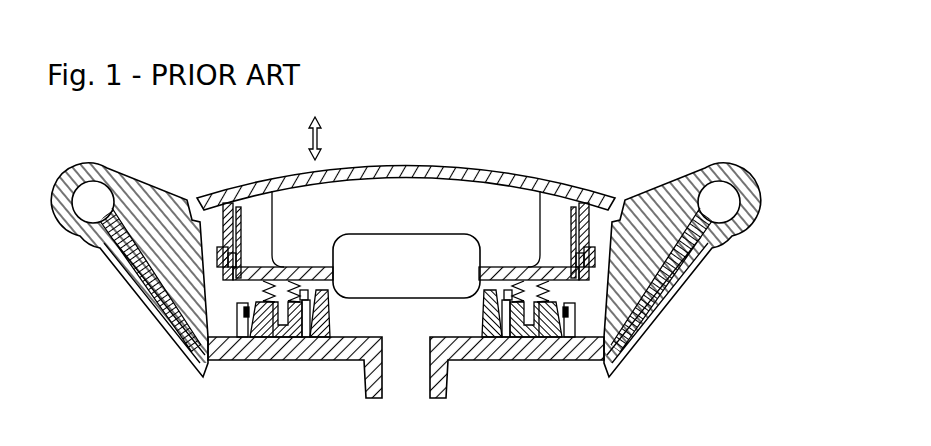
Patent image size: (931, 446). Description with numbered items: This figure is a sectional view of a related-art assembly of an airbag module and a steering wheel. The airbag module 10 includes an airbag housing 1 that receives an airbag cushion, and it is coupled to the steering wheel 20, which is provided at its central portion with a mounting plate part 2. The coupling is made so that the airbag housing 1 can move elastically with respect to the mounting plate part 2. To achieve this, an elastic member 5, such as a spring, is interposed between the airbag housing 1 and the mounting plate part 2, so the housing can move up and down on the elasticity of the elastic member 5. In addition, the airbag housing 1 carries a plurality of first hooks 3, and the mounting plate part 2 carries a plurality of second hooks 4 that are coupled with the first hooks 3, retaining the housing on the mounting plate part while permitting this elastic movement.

The airbag module 10 is at (448, 160).
The steering wheel 20 is at (690, 292).
The airbag housing 1 is at (506, 267).
The mounting plate part 2 is at (524, 348).
The first hooks 3 is at (566, 325).
The second hooks 4 is at (565, 296).
The elastic member 5 is at (263, 291).